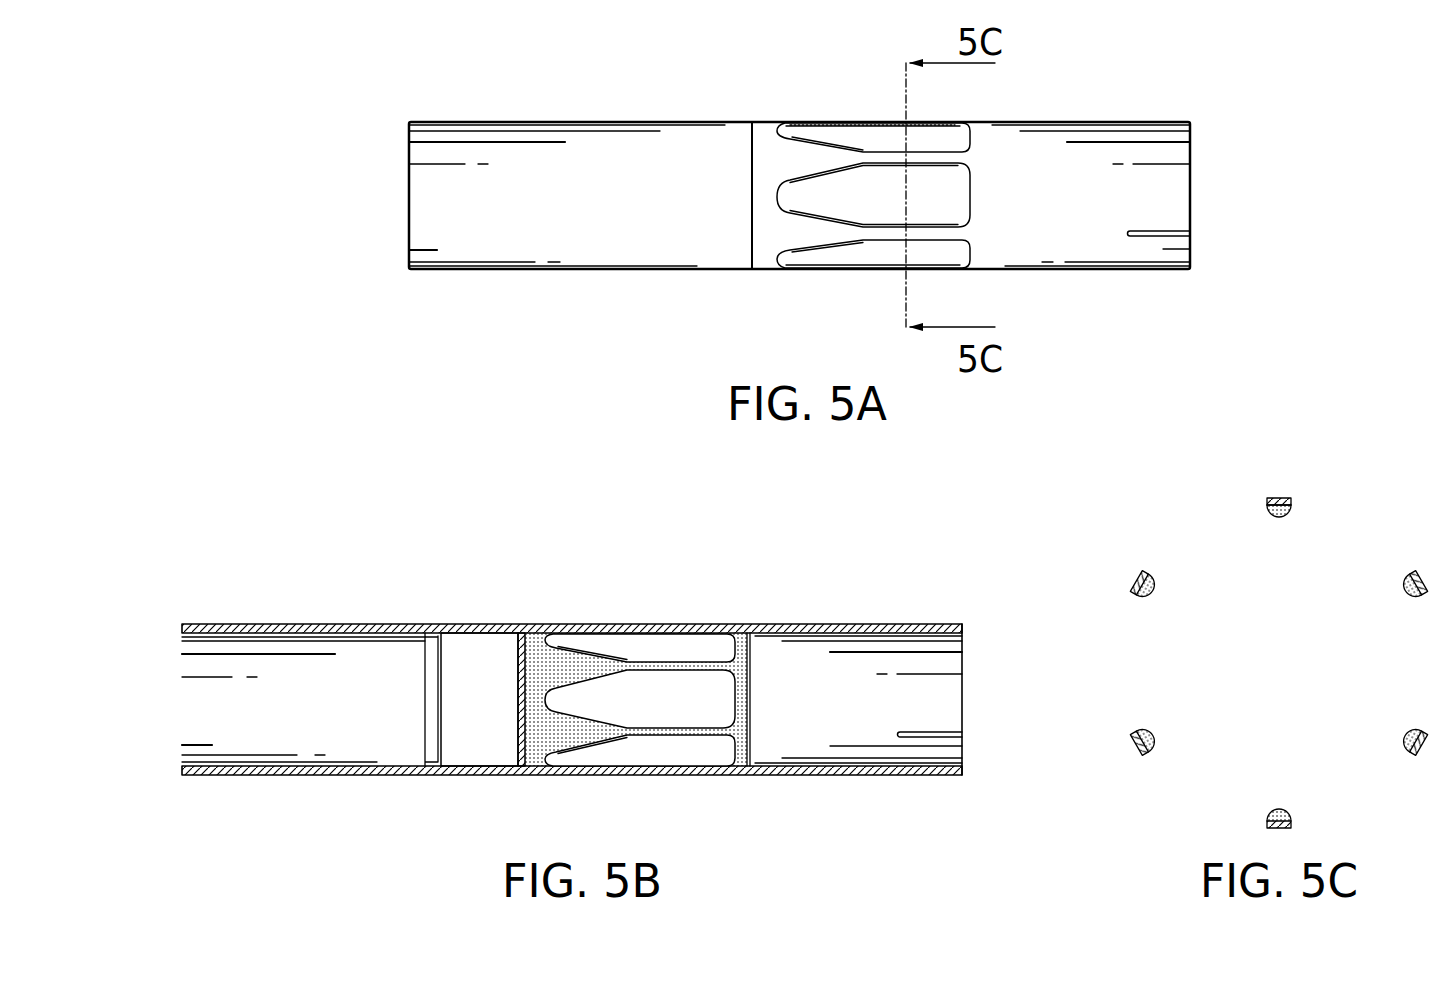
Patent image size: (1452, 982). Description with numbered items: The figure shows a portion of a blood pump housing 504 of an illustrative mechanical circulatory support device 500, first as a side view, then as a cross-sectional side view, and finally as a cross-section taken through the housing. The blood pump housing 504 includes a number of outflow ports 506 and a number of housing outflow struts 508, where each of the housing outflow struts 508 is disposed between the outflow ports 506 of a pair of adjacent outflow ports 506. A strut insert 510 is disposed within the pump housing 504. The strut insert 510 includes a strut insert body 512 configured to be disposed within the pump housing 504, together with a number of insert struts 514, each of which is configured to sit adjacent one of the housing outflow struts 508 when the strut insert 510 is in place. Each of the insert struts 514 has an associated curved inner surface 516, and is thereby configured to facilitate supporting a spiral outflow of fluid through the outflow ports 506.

In FIG. 5B, the mixing device assembly 500 is at (215, 577).
In FIG. 5A, the blood pump housing 504 is at (375, 73).
In FIG. 5C, the blood pump housing 504 is at (1135, 518).
In FIG. 5A, the outflow ports 506 is at (835, 203).
In FIG. 5A, the housing outflow struts 508 is at (950, 123).
In FIG. 5A, the strut insert 510 is at (868, 122).
In FIG. 5B, the strut insert 510 is at (538, 636).
In FIG. 5B, the strut insert body 512 is at (537, 752).
In FIG. 5B, the insert struts 514 is at (697, 667).
In FIG. 5C, the insert struts 514 is at (1281, 497).
In FIG. 5A, the curved inner surface 516 is at (940, 260).
In FIG. 5C, the curved inner surface 516 is at (1280, 519).